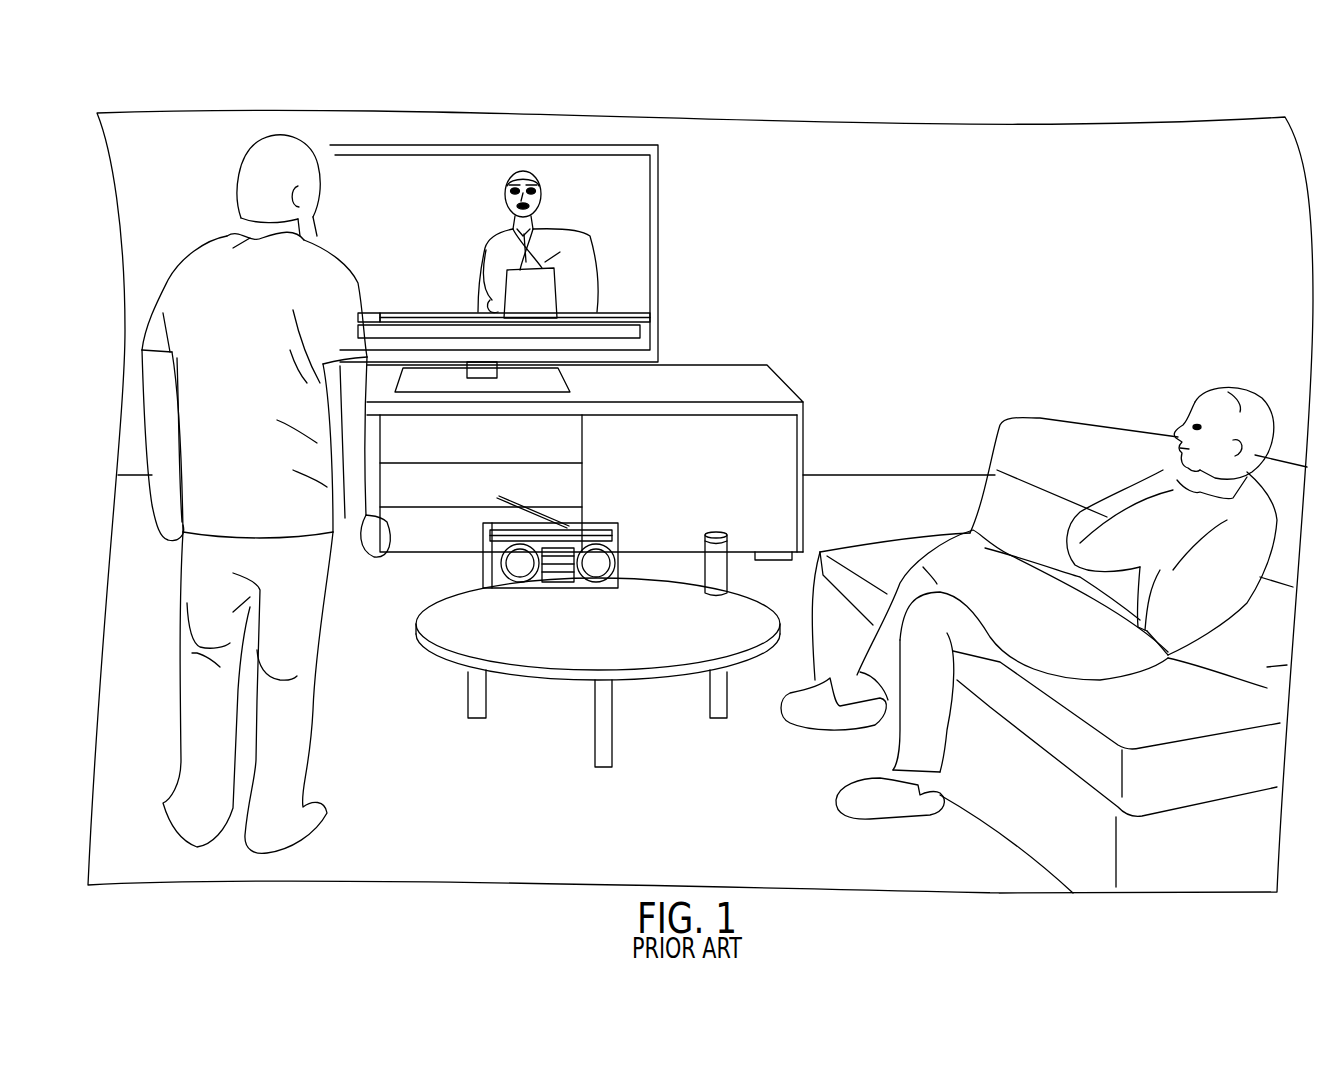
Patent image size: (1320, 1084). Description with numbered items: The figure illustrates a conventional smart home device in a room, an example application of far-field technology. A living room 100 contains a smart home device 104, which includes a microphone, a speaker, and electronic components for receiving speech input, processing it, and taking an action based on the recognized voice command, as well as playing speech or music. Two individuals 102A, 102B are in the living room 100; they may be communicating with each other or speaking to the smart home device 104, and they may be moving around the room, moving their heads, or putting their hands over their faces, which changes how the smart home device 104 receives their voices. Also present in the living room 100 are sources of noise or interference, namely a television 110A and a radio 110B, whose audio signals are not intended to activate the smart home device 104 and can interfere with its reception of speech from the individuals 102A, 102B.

The living room 100 is at (1160, 112).
The individual 102A is at (1240, 388).
The individual 102B is at (237, 160).
The smart home device 104 is at (715, 597).
The television 110A is at (660, 232).
The radio 110B is at (590, 590).